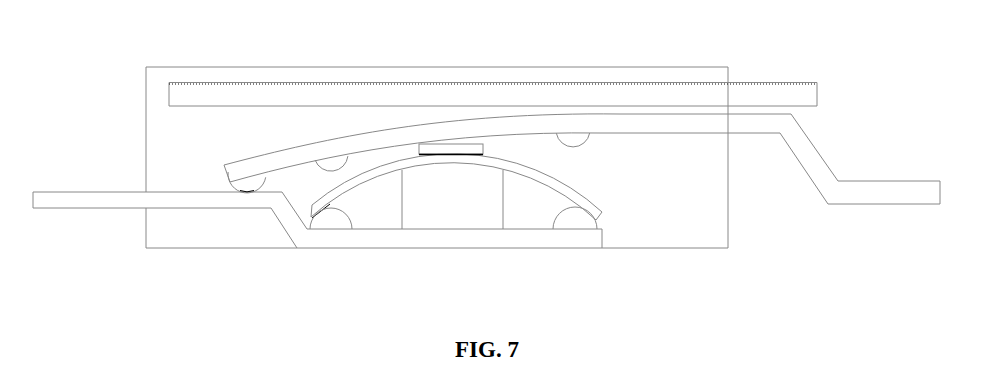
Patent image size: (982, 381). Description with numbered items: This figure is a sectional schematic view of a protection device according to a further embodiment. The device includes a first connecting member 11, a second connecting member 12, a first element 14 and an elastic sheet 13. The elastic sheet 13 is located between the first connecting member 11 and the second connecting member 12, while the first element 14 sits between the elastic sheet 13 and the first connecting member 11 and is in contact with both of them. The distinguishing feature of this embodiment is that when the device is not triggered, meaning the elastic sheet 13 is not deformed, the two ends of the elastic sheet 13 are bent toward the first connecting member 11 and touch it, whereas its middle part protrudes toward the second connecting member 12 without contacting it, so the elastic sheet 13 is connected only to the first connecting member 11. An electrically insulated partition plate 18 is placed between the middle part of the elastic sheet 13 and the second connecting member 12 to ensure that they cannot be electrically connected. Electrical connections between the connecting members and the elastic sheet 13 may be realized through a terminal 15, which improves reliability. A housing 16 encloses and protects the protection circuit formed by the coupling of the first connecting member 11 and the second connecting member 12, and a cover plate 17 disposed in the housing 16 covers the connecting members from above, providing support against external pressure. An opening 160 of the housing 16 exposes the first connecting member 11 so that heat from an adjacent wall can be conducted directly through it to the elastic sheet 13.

The first connecting member 11 is at (208, 203).
The second connecting member 12 is at (750, 128).
The elastic sheet 13 is at (362, 180).
The first element 14 is at (450, 217).
The terminal 15 is at (250, 183).
The housing 16 is at (146, 115).
The cover plate 17 is at (380, 92).
The partition plate 18 is at (450, 147).
The opening 160 is at (440, 250).